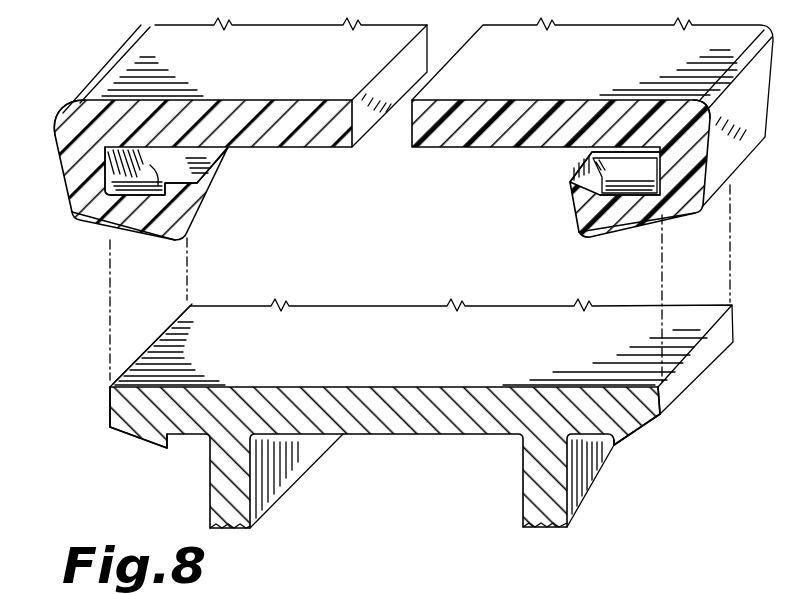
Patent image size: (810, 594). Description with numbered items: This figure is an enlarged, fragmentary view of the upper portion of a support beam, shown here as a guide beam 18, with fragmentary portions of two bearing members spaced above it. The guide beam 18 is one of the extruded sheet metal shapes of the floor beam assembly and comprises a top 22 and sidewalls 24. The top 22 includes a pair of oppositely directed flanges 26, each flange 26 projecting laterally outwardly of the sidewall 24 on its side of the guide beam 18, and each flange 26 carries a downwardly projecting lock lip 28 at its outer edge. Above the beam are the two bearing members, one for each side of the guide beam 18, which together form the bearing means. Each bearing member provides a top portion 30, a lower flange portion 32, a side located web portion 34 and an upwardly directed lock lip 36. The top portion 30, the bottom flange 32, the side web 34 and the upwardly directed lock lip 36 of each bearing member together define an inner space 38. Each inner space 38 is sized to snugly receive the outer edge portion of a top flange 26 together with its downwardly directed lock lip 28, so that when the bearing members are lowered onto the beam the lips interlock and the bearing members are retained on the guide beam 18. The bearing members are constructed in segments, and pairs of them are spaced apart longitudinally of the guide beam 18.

The guide beam 18 is at (404, 381).
The top 22 is at (420, 368).
The sidewalls 24 is at (265, 493).
The flange 26 is at (138, 412).
The lock lip 28 is at (165, 448).
The top portion 30 is at (303, 110).
The lower flange portion 32 is at (110, 222).
The side located web portion 34 is at (67, 171).
The lock lip 36 is at (205, 175).
The inner space 38 is at (143, 172).